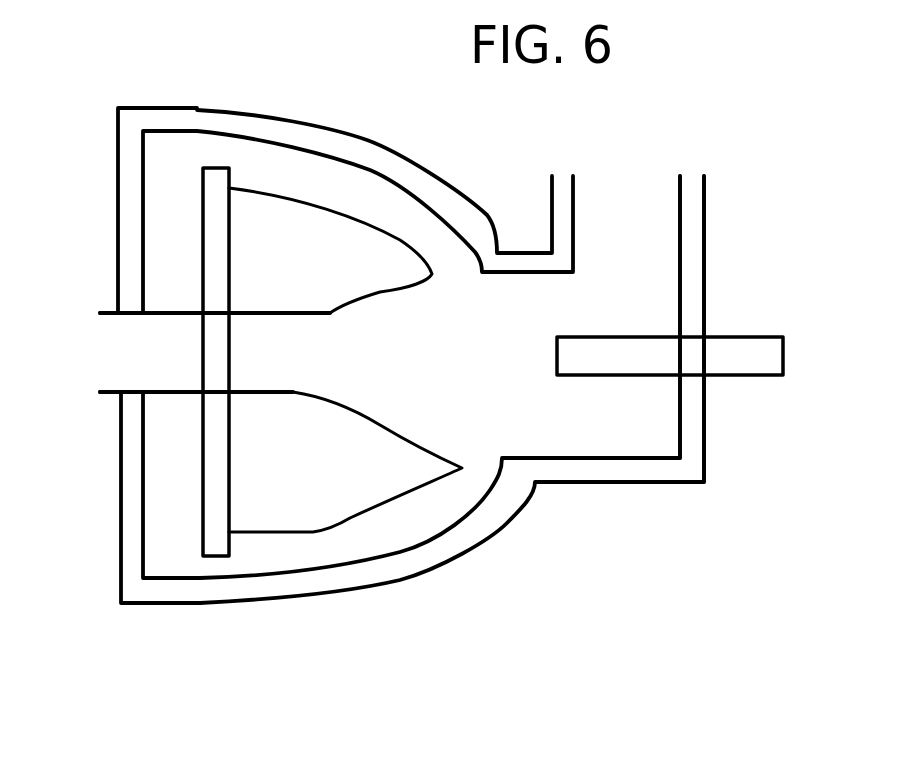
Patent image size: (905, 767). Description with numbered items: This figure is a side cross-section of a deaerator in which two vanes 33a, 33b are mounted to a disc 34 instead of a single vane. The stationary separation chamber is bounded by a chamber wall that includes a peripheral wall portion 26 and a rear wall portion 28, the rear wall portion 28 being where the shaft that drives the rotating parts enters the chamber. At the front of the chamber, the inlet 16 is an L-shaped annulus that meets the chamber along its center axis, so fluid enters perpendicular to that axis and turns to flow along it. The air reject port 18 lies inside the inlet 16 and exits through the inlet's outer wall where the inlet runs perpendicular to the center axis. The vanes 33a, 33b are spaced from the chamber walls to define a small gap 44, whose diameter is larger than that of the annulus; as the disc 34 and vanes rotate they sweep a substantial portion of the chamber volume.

The inlet 16 is at (622, 220).
The air reject port 18 is at (763, 375).
The peripheral wall portion 26 is at (408, 563).
The rear wall portion 28 is at (121, 493).
The vane 33a is at (322, 223).
The vane 33b is at (352, 487).
The disc 34 is at (208, 175).
The gap 44 is at (232, 570).